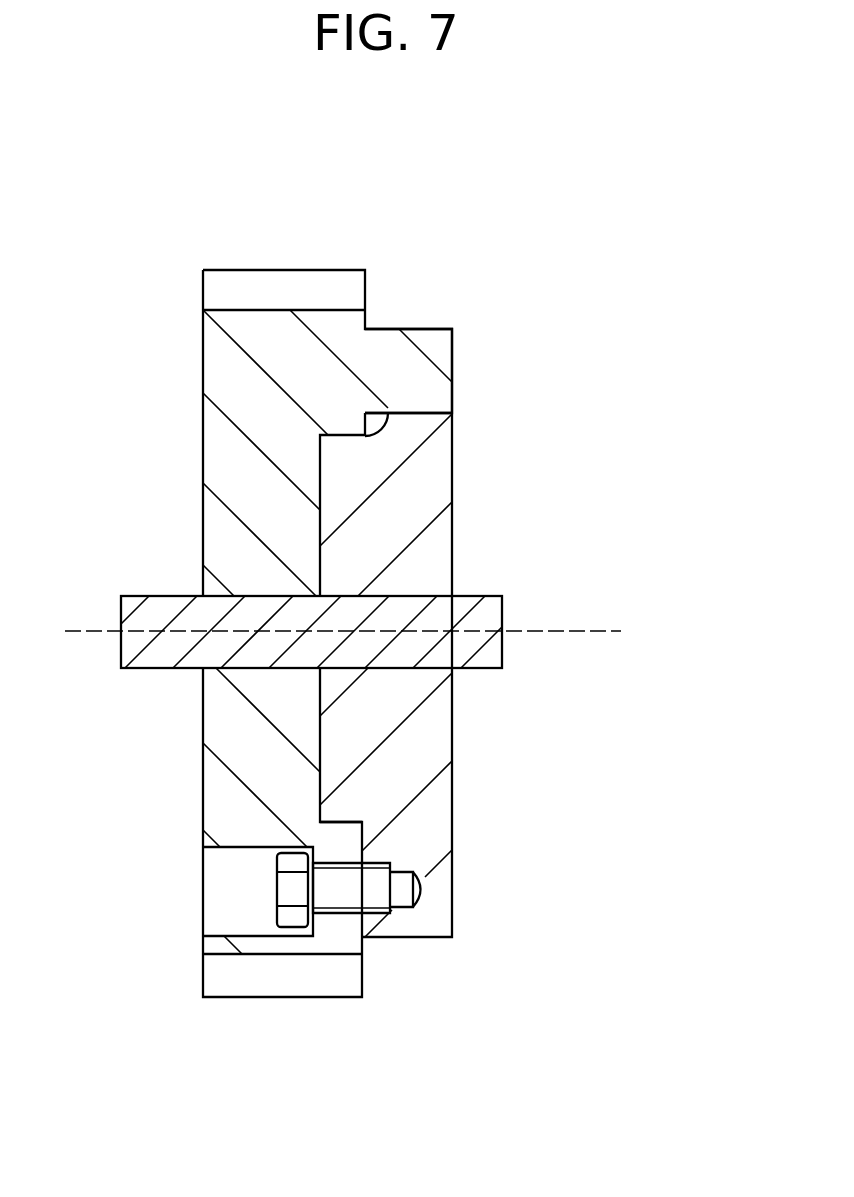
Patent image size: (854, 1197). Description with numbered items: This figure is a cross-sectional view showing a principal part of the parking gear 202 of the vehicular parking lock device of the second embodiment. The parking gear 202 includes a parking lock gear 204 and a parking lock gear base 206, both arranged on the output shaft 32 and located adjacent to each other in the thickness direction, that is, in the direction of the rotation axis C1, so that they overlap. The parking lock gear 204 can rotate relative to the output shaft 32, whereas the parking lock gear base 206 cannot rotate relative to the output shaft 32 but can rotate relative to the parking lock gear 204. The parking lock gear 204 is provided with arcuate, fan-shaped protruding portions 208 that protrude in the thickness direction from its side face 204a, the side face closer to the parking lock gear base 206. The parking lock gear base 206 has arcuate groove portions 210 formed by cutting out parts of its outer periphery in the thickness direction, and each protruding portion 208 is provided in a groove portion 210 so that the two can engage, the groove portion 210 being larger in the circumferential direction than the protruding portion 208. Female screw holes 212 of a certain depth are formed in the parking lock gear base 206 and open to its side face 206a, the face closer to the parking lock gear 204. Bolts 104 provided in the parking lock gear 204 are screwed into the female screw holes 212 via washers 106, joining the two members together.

The parking gear 202 is at (400, 614).
The parking lock gear 204 is at (349, 570).
The side face of the parking lock gear 204a is at (390, 407).
The parking lock gear base 206 is at (464, 726).
The side face of the parking lock gear base 206a is at (357, 833).
The protruding portion 208 is at (433, 343).
The groove portion 210 is at (412, 412).
The female screw hole 212 is at (378, 910).
The bolt 104 is at (267, 968).
The washer 106 is at (308, 890).
The output shaft 32 is at (157, 650).
The rotation axis C1 is at (574, 633).